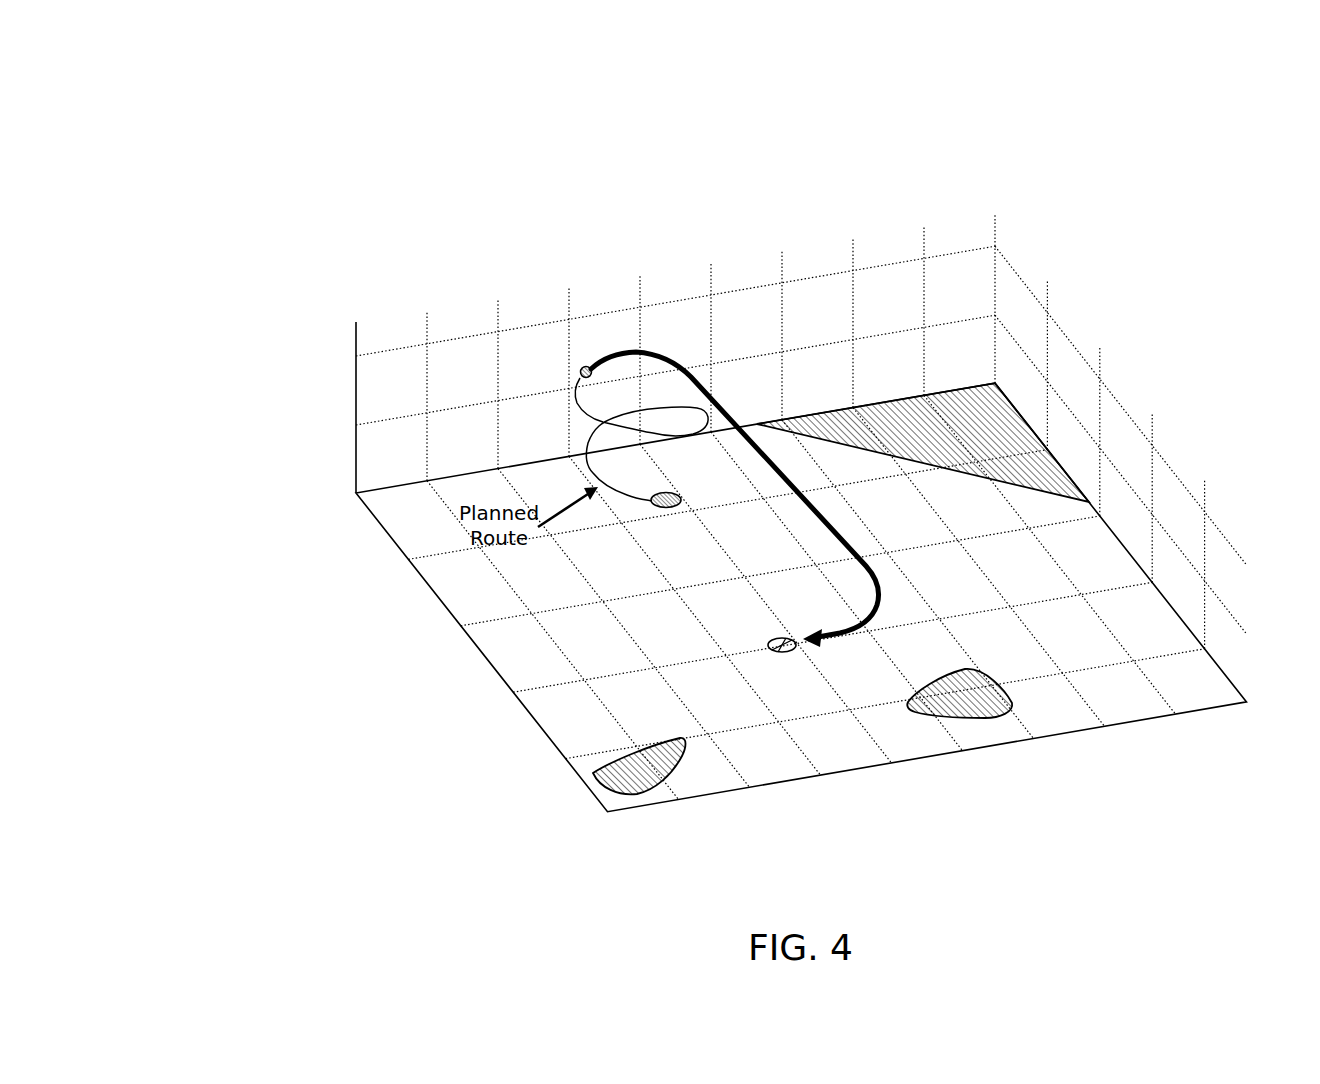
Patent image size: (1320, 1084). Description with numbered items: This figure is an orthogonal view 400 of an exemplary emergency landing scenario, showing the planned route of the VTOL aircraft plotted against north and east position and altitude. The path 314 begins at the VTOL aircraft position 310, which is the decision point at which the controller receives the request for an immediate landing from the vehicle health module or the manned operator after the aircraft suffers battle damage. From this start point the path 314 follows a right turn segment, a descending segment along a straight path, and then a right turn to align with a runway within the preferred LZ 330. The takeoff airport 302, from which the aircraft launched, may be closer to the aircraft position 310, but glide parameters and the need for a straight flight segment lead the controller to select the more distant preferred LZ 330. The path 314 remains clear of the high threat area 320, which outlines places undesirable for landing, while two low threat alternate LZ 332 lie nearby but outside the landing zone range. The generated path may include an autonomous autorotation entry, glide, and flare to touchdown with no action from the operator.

The flight path visualization 400 is at (157, 118).
The takeoff airport 302 is at (660, 520).
The VTOL aircraft position 310 is at (503, 289).
The path 314 is at (895, 569).
The high threat area 320 is at (1058, 467).
The preferred LZ 330 is at (742, 656).
The low threat alternate LZ 332 is at (700, 764).